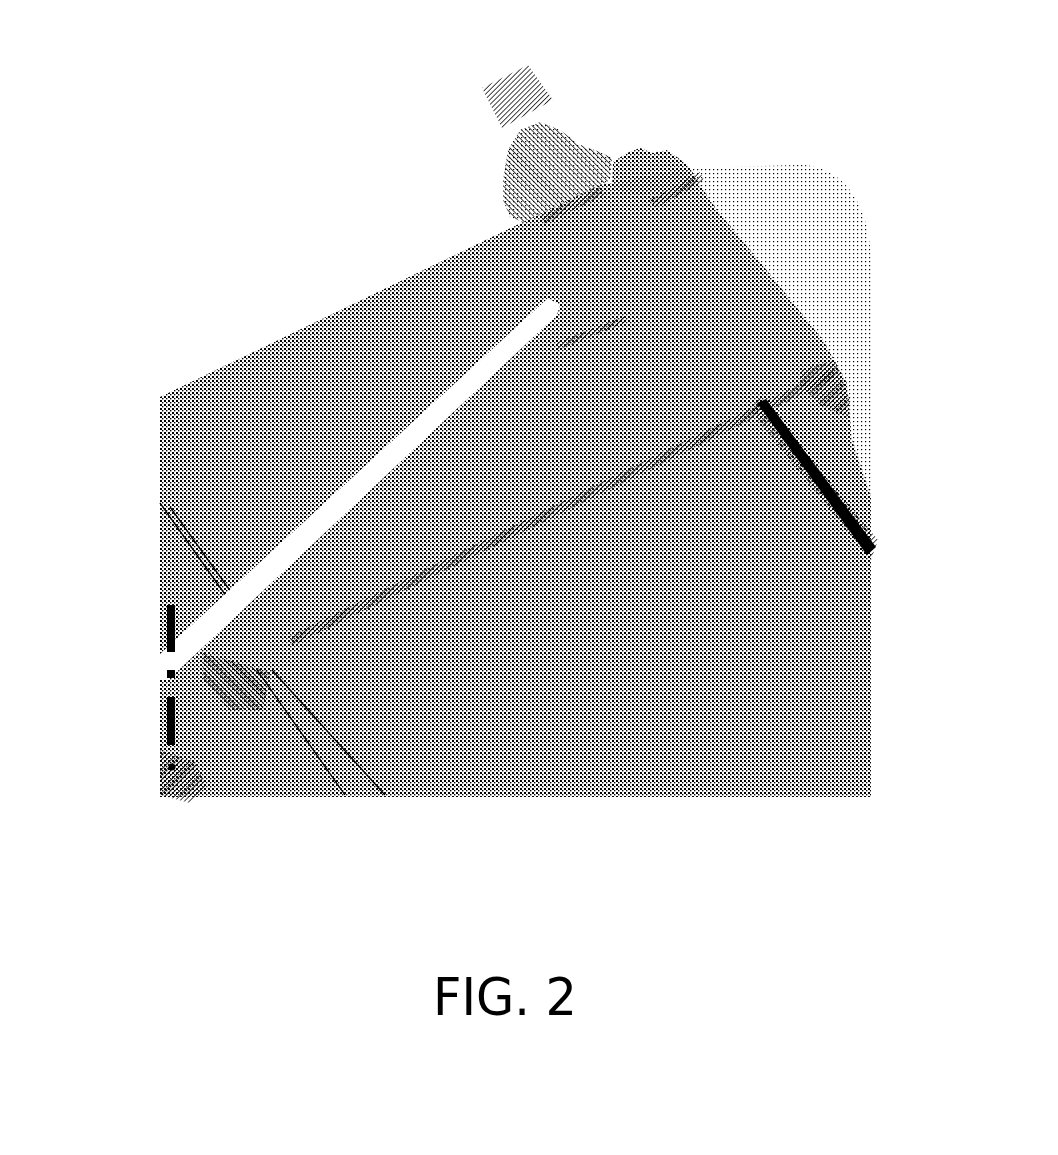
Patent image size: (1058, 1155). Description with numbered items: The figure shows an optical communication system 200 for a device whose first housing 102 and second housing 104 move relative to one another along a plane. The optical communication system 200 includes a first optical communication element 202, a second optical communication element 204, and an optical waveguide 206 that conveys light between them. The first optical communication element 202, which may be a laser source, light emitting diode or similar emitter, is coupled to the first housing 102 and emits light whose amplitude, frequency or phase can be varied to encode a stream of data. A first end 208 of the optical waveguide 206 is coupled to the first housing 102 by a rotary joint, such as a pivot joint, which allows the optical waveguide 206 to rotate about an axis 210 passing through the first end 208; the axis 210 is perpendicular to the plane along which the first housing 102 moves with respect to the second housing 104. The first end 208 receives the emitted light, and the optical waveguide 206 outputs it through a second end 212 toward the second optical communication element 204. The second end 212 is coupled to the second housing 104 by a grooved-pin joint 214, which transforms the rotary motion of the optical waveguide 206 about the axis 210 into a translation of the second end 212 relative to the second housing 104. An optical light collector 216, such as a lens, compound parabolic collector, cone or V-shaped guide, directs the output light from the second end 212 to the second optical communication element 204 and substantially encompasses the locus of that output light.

The optical communication system 200 is at (862, 903).
The first housing 102 is at (842, 463).
The second housing 104 is at (678, 162).
The first optical communication element 202 is at (223, 750).
The second optical communication element 204 is at (550, 93).
The optical waveguide 206 is at (573, 293).
The first end 208 is at (165, 755).
The axis 210 is at (167, 613).
The second end 212 is at (573, 223).
The grooved-pin joint 214 is at (613, 327).
The optical light collector 216 is at (577, 140).